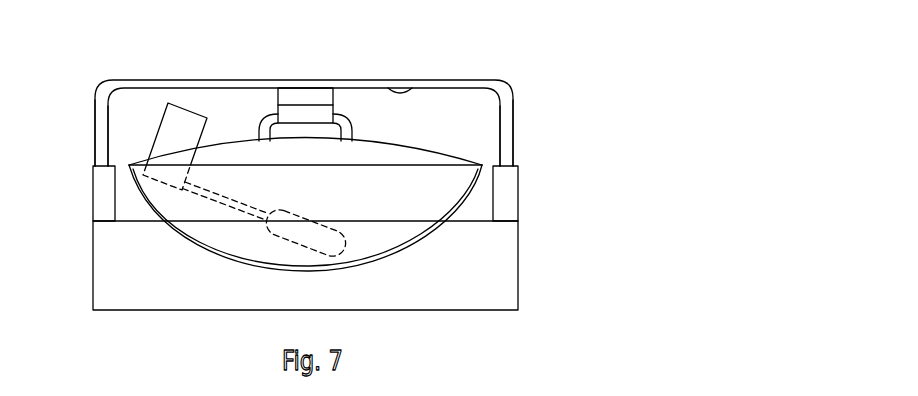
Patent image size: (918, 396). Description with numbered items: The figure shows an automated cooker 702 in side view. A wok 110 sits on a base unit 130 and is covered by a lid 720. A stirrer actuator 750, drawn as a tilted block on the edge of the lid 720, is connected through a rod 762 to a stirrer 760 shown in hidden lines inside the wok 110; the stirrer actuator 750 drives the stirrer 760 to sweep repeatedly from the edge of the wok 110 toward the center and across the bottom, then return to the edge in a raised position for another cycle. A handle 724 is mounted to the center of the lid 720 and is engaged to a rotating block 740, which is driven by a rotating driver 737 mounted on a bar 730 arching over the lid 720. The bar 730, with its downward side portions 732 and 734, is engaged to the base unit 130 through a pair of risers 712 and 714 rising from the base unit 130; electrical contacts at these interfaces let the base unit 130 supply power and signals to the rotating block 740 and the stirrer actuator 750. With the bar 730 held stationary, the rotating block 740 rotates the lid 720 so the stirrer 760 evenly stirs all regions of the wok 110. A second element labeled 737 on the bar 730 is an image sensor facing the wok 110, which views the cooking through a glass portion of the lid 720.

The automated cooker 702 is at (514, 33).
The bar 730 is at (228, 81).
The left handle leg 732 is at (98, 129).
The right handle leg 734 is at (504, 126).
The riser 712 is at (91, 188).
The riser 714 is at (518, 190).
The base unit 130 is at (305, 265).
The rotating driver 737 is at (302, 95).
The rotating block 740 is at (308, 113).
The handle 724 is at (345, 129).
The lid 720 is at (412, 153).
The wok 110 is at (305, 218).
The stirrer actuator 750 is at (185, 115).
The rod 762 is at (227, 199).
The stirrer 760 is at (287, 221).